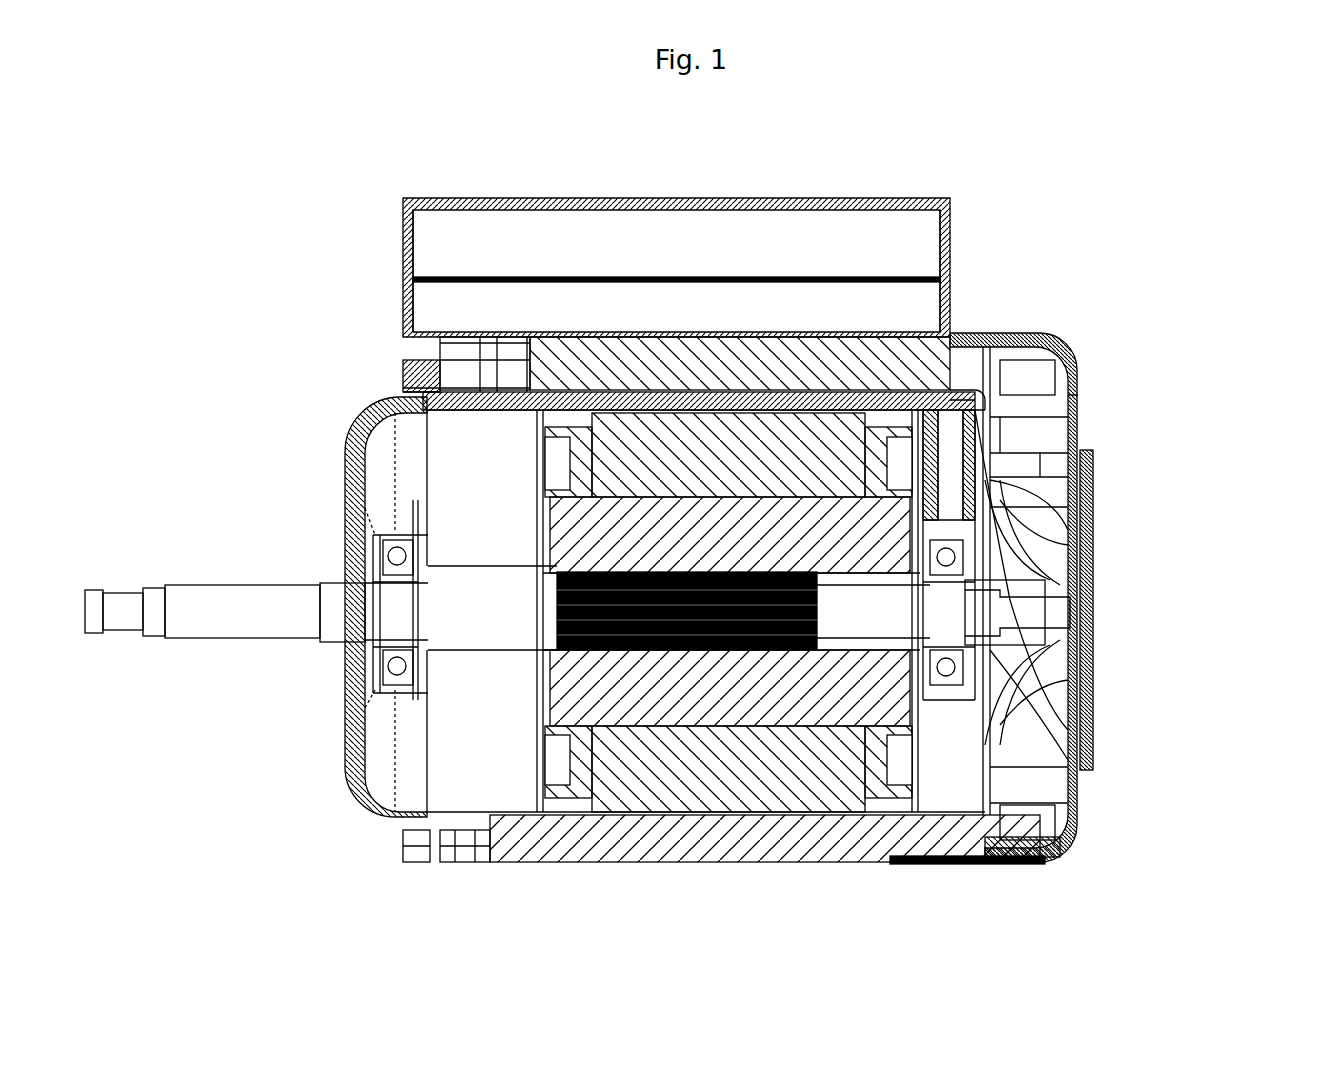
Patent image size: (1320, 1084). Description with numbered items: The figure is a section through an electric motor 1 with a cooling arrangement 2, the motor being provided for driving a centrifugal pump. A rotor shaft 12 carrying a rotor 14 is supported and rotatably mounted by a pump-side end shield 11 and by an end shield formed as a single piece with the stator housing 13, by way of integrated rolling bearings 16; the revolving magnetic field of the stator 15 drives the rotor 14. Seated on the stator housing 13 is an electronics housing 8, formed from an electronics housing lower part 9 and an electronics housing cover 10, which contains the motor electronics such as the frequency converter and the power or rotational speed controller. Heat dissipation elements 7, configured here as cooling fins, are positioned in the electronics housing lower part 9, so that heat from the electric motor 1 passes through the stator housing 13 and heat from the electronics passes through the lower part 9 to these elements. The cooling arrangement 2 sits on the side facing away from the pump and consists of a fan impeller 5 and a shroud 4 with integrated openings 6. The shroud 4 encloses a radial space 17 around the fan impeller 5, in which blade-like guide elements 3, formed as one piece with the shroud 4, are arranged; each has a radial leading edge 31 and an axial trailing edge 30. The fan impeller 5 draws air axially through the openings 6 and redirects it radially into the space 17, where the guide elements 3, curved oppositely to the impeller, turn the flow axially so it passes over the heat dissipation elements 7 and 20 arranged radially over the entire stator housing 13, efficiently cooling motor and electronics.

The electric motor 1 is at (300, 494).
The cooling arrangement 2 is at (1118, 425).
The guide elements 3 is at (1040, 380).
The shroud 4 is at (1055, 342).
The fan impeller 5 is at (1045, 583).
The openings 6 is at (1095, 690).
The heat dissipation elements 7 is at (570, 370).
The electronics housing 8 is at (375, 246).
The electronics housing lower part 9 is at (405, 308).
The electronics housing cover 10 is at (410, 207).
The pump-side end shield 11 is at (355, 470).
The rotor shaft 12 is at (250, 605).
The stator housing 13 is at (897, 408).
The rotor 14 is at (663, 700).
The stator 15 is at (787, 785).
The rolling bearings 16 is at (385, 670).
The radial space 17 is at (1038, 815).
The heat dissipation elements 20 is at (570, 847).
The axial trailing edge 30 is at (985, 398).
The radial leading edge 31 is at (1043, 406).